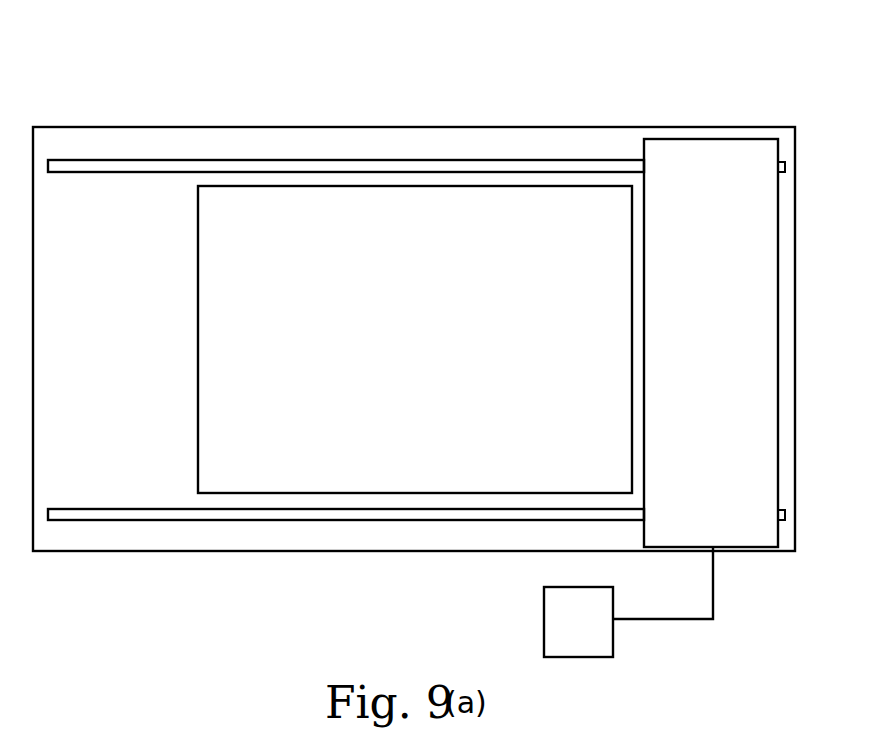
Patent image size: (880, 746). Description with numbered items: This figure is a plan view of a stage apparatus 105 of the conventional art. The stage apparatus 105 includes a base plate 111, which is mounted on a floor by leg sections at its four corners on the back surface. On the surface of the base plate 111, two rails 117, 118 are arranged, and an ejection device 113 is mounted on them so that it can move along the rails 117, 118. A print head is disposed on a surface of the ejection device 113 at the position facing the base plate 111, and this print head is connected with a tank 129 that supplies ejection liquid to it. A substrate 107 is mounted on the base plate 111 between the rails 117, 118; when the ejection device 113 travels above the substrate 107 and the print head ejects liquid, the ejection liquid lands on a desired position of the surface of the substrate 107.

The stage apparatus 105 is at (92, 34).
The base plate 111 is at (468, 150).
The rail 117 is at (121, 172).
The rail 118 is at (115, 509).
The substrate 107 is at (375, 485).
The ejection device 113 is at (652, 275).
The tank 129 is at (548, 632).